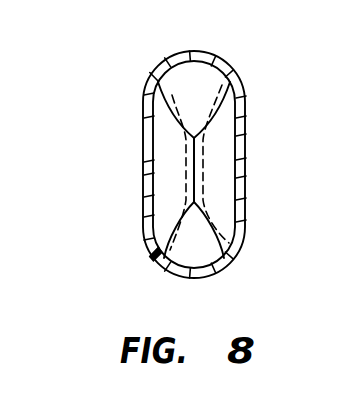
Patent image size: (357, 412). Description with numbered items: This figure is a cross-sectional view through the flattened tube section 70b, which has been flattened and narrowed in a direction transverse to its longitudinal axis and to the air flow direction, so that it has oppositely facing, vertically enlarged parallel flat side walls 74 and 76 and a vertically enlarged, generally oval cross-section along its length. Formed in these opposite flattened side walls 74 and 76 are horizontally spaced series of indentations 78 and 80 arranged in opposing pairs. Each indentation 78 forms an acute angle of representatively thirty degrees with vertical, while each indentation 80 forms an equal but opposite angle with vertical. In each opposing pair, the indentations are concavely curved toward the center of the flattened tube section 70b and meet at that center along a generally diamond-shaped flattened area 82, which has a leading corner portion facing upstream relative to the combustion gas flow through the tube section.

The flattened tube section 70b is at (194, 150).
The flat side wall 74 is at (245, 203).
The flat side wall 76 is at (143, 199).
The indentation 78 is at (214, 157).
The indentation 80 is at (166, 147).
The diamond-shaped flattened area 82 is at (190, 176).